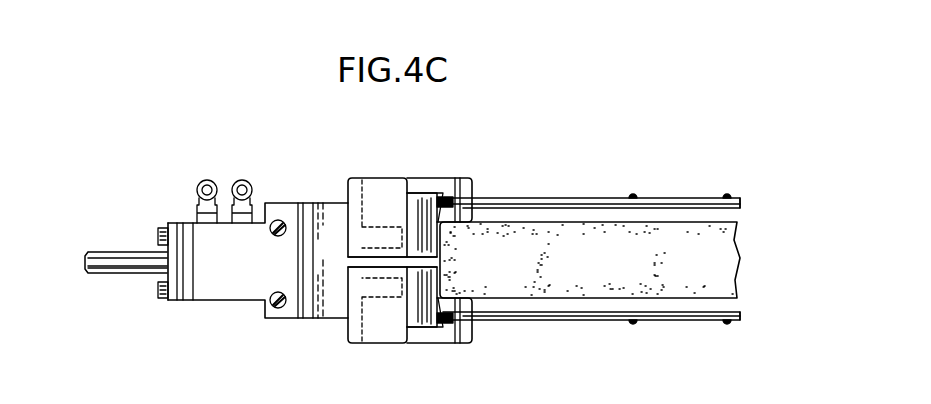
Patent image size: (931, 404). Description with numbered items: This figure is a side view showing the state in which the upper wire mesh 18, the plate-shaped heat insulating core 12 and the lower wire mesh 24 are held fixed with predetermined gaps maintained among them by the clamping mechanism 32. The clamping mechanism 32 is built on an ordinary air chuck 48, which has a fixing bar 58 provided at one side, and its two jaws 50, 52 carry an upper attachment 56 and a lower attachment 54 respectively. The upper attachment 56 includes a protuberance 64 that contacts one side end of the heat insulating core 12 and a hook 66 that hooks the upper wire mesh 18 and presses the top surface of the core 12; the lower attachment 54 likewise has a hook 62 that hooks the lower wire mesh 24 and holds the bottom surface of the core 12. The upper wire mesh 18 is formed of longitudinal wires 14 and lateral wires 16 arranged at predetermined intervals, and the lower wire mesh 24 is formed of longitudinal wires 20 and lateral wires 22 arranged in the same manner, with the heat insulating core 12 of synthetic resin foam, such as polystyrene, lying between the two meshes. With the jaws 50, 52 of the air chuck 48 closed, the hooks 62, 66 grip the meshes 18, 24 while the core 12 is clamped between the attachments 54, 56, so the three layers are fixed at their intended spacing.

The heat insulating core 12 is at (740, 258).
The longitudinal wires 14 is at (672, 199).
The lateral wires 16 is at (444, 193).
The upper wire mesh 18 is at (752, 204).
The longitudinal wires 20 is at (673, 321).
The lateral wires 22 is at (453, 343).
The lower wire mesh 24 is at (750, 316).
The clamping mechanism 32 is at (273, 192).
The air chuck 48 is at (316, 206).
The jaw 50 is at (356, 178).
The jaw 52 is at (357, 346).
The lower attachment 54 is at (396, 345).
The upper attachment 56 is at (393, 186).
The fixing bar 58 is at (120, 252).
The hook 62 is at (425, 345).
The protuberance 64 is at (426, 208).
The hook 66 is at (470, 212).